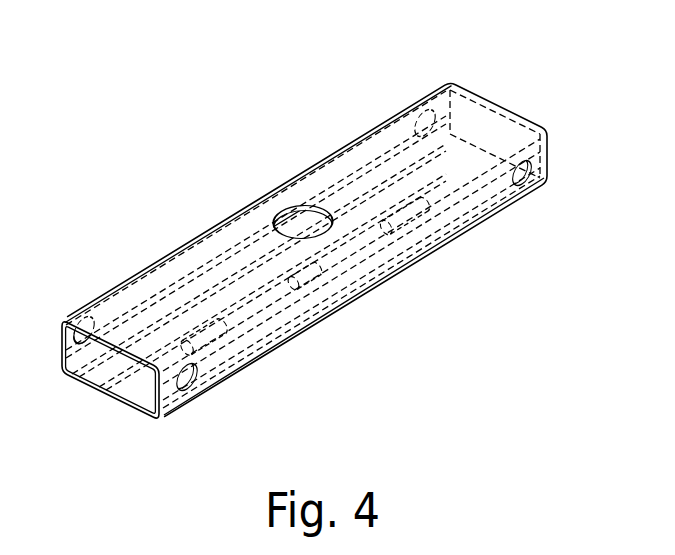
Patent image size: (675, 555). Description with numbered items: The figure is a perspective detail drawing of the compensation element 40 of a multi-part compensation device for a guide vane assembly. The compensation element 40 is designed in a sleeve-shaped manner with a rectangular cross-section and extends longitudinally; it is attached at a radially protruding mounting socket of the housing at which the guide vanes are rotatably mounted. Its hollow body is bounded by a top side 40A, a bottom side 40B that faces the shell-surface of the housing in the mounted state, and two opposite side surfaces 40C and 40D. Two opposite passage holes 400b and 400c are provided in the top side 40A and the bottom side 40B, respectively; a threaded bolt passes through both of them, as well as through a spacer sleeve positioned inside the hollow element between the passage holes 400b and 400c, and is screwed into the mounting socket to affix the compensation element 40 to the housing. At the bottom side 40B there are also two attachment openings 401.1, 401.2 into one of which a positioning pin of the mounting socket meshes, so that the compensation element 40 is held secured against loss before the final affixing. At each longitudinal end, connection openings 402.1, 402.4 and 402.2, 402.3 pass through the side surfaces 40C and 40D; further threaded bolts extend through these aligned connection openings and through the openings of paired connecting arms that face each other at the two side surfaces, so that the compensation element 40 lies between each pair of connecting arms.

The compensation element 40 is at (360, 131).
The top side 40A is at (488, 112).
The bottom side 40B is at (208, 395).
The side surface 40C is at (383, 263).
The side surface 40D is at (217, 220).
The passage hole 400b is at (285, 210).
The passage hole 400c is at (320, 284).
The attachment opening 401.1 is at (217, 347).
The attachment opening 401.2 is at (432, 220).
The connection opening 402.1 is at (157, 407).
The connection opening 402.2 is at (546, 183).
The connection opening 402.3 is at (420, 102).
The connection opening 402.4 is at (87, 305).